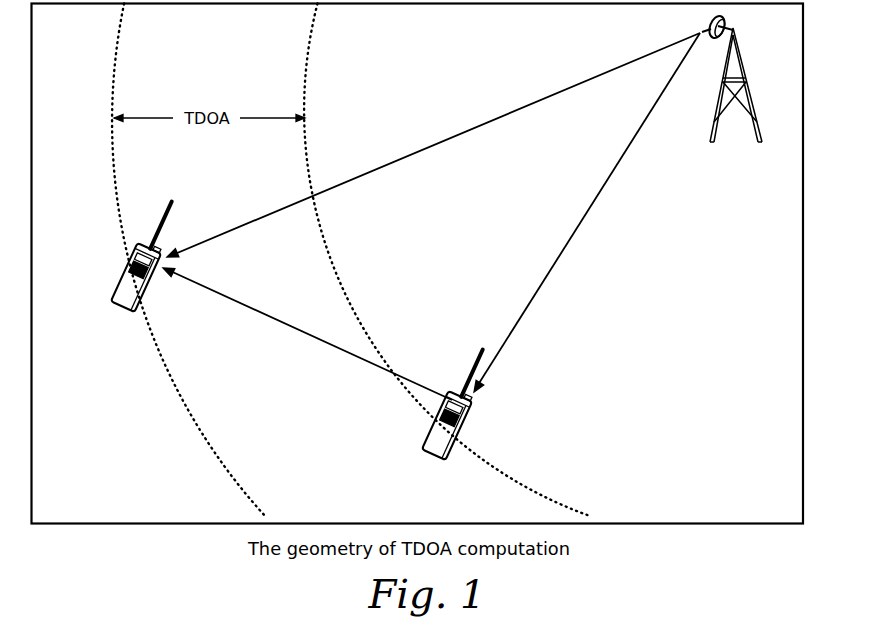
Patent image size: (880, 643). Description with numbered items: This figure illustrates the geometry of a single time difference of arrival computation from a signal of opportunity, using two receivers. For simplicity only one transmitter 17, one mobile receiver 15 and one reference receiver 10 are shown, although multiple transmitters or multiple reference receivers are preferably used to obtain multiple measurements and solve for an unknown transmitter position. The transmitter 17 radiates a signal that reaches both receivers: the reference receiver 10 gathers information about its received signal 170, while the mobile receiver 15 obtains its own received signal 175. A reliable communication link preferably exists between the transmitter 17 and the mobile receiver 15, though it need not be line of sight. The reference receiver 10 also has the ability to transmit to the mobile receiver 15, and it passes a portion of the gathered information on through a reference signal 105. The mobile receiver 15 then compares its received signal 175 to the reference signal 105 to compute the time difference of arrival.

The transmitter 17 is at (737, 101).
The mobile receiver 15 is at (159, 258).
The reference receiver 10 is at (488, 402).
The received signal 175 is at (433, 145).
The received signal 170 is at (587, 212).
The reference signal 105 is at (307, 334).